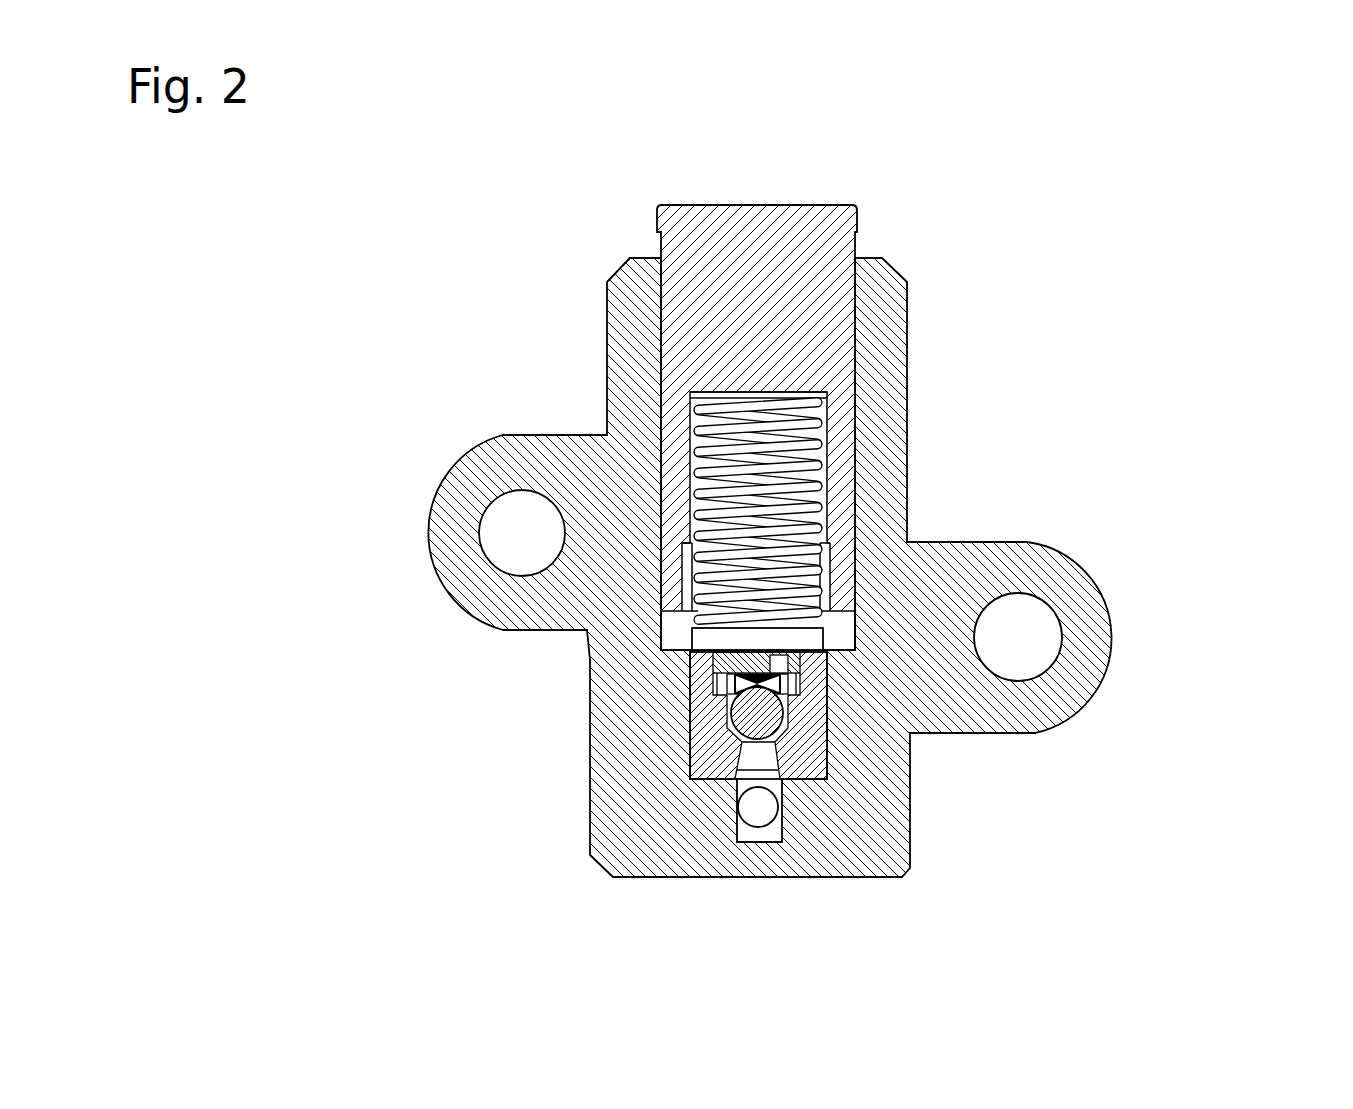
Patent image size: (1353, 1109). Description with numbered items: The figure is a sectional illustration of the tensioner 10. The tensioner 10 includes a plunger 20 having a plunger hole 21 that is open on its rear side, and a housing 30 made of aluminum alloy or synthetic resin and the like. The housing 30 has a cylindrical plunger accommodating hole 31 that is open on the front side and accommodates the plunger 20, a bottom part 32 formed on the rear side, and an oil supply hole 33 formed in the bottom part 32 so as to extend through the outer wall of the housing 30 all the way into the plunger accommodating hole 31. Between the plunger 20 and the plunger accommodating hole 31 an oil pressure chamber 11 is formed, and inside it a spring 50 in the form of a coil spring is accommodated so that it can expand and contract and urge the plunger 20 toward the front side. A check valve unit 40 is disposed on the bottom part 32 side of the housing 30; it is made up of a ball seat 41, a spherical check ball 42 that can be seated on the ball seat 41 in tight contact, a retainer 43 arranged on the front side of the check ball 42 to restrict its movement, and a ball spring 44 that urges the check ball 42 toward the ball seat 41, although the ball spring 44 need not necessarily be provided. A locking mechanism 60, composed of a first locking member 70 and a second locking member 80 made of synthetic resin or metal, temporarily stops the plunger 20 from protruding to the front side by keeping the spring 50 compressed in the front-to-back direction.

The tensioner 10 is at (432, 177).
The oil pressure chamber 11 is at (683, 460).
The plunger 20 is at (765, 247).
The plunger hole 21 is at (680, 557).
The housing 30 is at (882, 290).
The plunger accommodating hole 31 is at (642, 345).
The bottom part 32 is at (682, 718).
The oil supply hole 33 is at (757, 808).
The check valve unit 40 is at (1223, 603).
The ball seat 41 is at (797, 755).
The check ball 42 is at (765, 716).
The retainer 43 is at (793, 663).
The ball spring 44 is at (793, 680).
The spring 50 is at (690, 438).
The locking mechanism 60 is at (1113, 257).
The first locking member 70 is at (800, 390).
The second locking member 80 is at (788, 640).